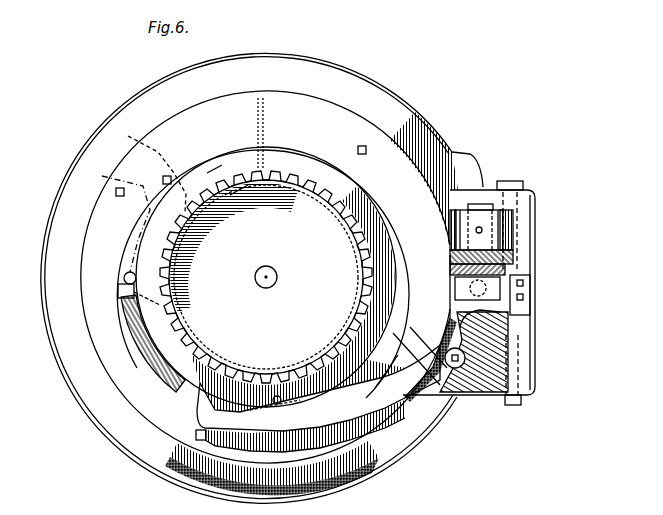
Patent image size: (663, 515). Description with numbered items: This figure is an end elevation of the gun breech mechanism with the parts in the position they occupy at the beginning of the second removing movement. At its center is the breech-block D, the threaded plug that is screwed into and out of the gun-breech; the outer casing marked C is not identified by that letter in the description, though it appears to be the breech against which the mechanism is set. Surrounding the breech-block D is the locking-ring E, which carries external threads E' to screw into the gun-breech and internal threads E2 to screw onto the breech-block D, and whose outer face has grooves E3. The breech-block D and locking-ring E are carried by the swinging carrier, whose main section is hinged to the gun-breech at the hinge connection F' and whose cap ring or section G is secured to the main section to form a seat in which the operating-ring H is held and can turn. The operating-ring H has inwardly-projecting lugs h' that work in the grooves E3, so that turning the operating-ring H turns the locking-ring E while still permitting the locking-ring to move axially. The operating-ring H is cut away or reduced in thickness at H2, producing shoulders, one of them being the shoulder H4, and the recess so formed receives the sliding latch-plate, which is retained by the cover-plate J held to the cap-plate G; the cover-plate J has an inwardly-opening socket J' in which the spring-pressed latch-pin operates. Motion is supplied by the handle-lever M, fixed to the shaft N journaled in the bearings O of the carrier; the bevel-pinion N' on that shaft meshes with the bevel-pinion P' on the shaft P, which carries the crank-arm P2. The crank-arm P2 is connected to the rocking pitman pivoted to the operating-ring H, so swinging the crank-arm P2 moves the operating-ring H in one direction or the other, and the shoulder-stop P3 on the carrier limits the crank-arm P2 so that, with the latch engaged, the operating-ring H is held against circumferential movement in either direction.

The casing C is at (387, 102).
The cap ring G is at (182, 150).
The operating-ring H is at (385, 266).
The reduced portion of the operating-ring H2 is at (84, 362).
The shoulder of the operating-ring H4 is at (145, 165).
The cover-plate J is at (139, 268).
The socket of the cover-plate J' is at (107, 286).
The breech-block D is at (254, 260).
The locking-ring E is at (293, 257).
The external threads of the locking-ring E' is at (262, 161).
The internal threads of the locking-ring E2 is at (212, 356).
The grooves of the locking-ring E3 is at (408, 326).
The inwardly-projecting lugs h' is at (275, 410).
The shaft N is at (481, 194).
The hinge connection F' is at (524, 213).
The bearings O is at (481, 229).
The handle-lever M is at (513, 256).
The bevel-pinion N' is at (515, 271).
The shaft P is at (460, 286).
The bevel-pinion P' is at (519, 323).
The crank-arm P2 is at (470, 332).
The shoulder-stop P3 is at (530, 313).